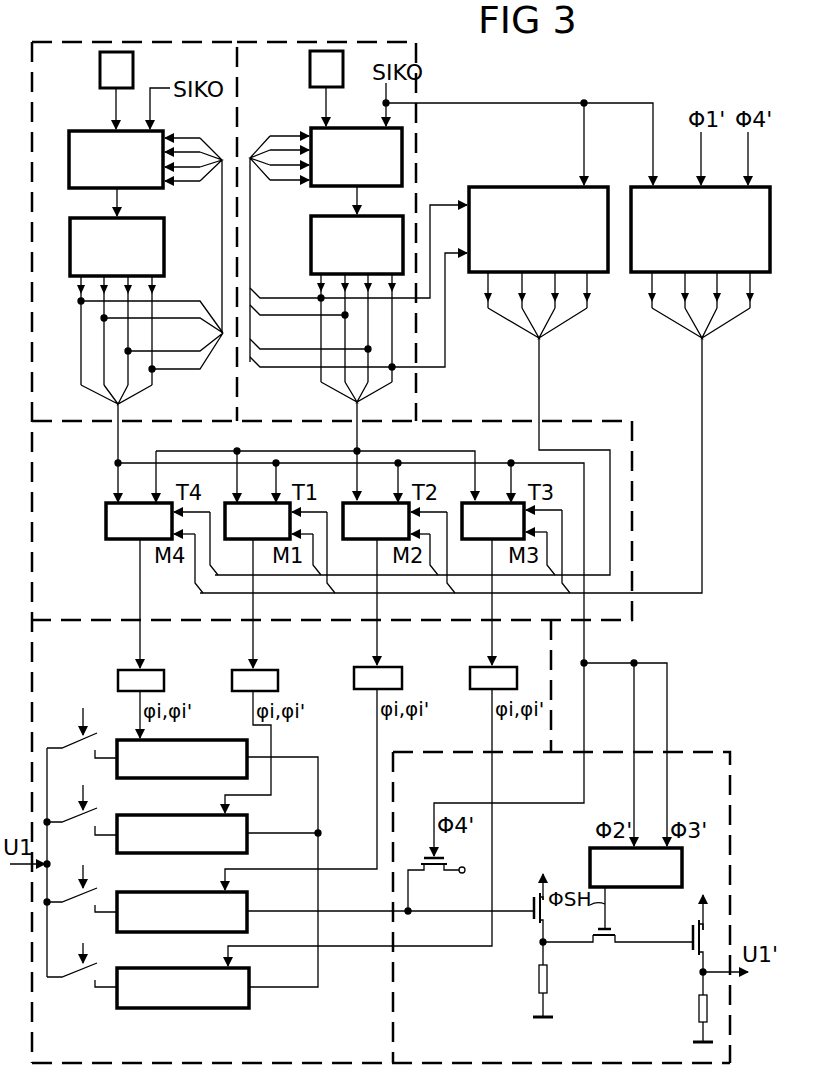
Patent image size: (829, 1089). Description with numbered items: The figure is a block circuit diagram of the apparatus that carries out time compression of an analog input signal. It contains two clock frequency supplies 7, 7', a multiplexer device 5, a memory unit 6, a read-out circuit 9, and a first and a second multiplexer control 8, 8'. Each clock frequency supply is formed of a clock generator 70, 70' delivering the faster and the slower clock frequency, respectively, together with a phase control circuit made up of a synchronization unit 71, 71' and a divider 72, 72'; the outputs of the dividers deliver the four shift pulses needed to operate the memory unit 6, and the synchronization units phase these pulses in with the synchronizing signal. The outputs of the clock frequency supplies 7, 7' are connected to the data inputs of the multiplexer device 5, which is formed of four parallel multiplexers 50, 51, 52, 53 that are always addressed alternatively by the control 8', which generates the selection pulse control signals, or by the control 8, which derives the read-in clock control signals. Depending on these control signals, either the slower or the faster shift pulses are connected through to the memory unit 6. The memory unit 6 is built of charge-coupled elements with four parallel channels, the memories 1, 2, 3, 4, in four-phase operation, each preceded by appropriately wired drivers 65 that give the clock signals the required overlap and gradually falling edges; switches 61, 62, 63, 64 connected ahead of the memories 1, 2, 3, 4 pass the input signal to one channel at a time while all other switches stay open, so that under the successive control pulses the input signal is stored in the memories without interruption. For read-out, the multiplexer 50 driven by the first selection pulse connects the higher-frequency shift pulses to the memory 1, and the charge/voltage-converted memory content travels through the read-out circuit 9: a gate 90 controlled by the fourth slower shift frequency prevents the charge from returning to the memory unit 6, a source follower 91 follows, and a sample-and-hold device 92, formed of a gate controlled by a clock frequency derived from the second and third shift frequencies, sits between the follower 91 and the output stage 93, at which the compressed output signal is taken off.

The clock frequency supply 7' is at (134, 535).
The clock frequency supply 7 is at (326, 214).
The clock generator 70' is at (91, 70).
The clock generator 70 is at (302, 69).
The synchronization unit 71' is at (106, 143).
The synchronization unit 71 is at (332, 142).
The divider 72' is at (96, 247).
The divider 72 is at (334, 245).
The multiplexer control 8 is at (538, 213).
The multiplexer control 8' is at (691, 213).
The multiplexer device 5 is at (73, 475).
The memory 4 is at (172, 968).
The multiplexer 50 is at (106, 524).
The multiplexer 51 is at (258, 540).
The multiplexer 52 is at (376, 540).
The multiplexer 53 is at (494, 540).
The memory unit 6 is at (73, 673).
The driver 65 is at (232, 681).
The switch 61 is at (79, 722).
The switch 62 is at (79, 799).
The switch 63 is at (80, 877).
The switch 64 is at (81, 954).
The memory 1 is at (208, 740).
The memory 2 is at (174, 815).
The memory 3 is at (172, 892).
The read-out circuit 9 is at (682, 752).
The gate 90 is at (449, 874).
The source follower 91 is at (539, 927).
The sample-and-hold device 92 is at (636, 891).
The output stage 93 is at (697, 950).